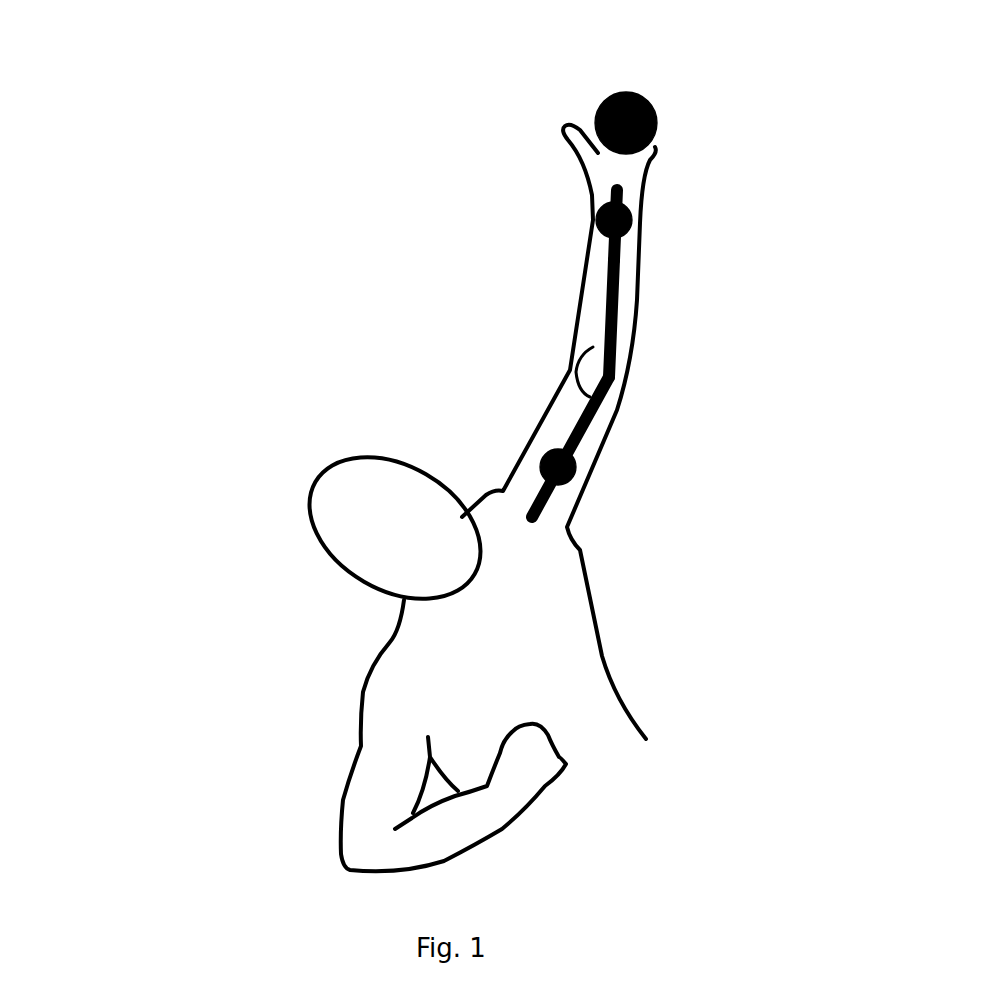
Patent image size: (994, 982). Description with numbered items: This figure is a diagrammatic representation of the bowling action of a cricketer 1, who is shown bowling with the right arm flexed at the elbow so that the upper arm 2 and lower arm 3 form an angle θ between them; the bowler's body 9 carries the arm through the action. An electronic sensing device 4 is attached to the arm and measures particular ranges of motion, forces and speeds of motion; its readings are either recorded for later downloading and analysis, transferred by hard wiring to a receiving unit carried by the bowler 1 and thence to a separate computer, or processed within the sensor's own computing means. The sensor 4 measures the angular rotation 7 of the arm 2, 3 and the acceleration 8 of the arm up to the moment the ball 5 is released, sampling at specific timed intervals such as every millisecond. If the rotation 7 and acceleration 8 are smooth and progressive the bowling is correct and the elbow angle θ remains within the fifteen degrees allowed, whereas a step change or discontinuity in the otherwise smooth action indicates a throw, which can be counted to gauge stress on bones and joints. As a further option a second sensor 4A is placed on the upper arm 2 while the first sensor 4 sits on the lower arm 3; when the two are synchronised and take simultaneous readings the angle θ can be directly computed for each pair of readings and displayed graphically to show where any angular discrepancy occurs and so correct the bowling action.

The cricketer 1 is at (176, 513).
The torso 9 is at (199, 732).
The ball 5 is at (582, 81).
The acceleration 8 is at (665, 153).
The angular rotation 7 is at (573, 254).
The lower arm 3 is at (640, 318).
The upper arm 2 is at (614, 434).
The electronic sensing device 4 is at (567, 210).
The second sensor 4A is at (596, 499).